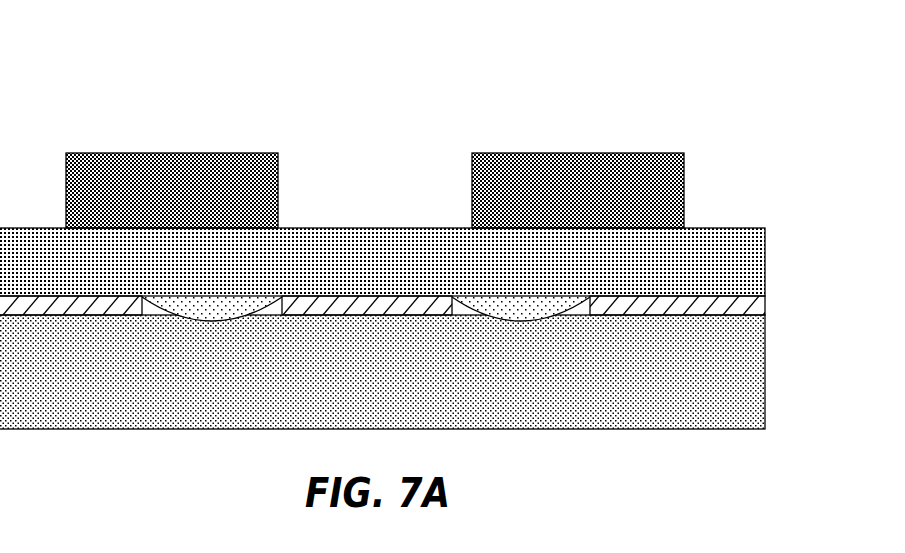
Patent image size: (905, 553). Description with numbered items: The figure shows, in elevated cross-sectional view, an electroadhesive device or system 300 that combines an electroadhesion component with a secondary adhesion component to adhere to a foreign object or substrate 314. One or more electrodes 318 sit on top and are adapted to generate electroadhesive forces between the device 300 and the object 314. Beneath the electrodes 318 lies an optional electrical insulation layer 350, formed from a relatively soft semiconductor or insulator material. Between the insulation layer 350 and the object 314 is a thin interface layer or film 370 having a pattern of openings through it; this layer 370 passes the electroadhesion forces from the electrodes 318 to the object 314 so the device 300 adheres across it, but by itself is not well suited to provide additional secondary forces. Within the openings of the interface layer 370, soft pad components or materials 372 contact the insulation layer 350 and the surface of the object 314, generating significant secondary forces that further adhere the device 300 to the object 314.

The electroadhesive device or system 300 is at (142, 62).
The foreign object or substrate 314 is at (380, 383).
The electrodes 318 is at (187, 203).
The electrical insulation layer 350 is at (380, 266).
The interface layer or film 370 is at (738, 302).
The soft pad components or materials 372 is at (574, 311).